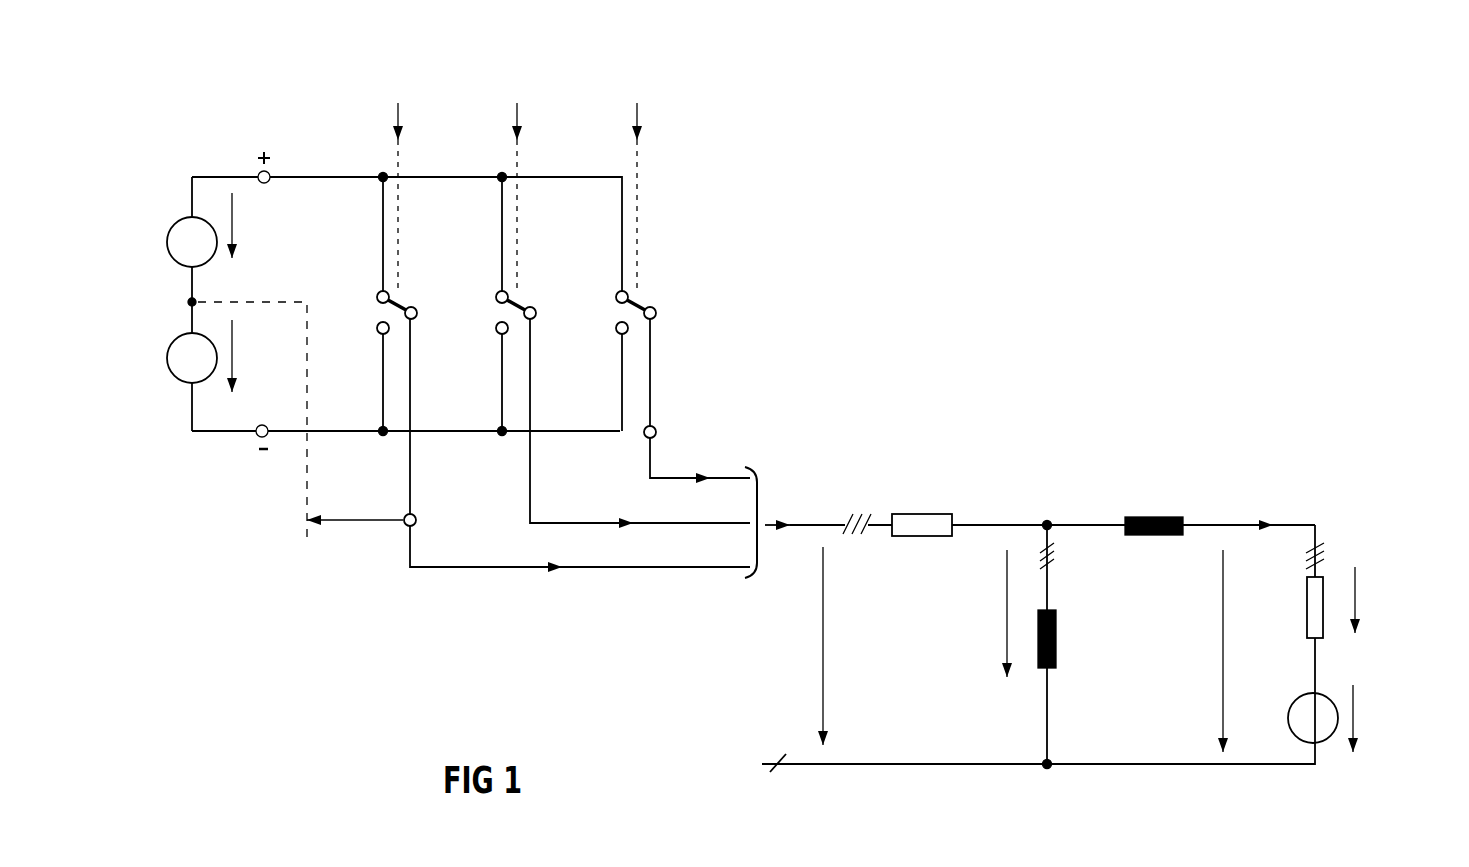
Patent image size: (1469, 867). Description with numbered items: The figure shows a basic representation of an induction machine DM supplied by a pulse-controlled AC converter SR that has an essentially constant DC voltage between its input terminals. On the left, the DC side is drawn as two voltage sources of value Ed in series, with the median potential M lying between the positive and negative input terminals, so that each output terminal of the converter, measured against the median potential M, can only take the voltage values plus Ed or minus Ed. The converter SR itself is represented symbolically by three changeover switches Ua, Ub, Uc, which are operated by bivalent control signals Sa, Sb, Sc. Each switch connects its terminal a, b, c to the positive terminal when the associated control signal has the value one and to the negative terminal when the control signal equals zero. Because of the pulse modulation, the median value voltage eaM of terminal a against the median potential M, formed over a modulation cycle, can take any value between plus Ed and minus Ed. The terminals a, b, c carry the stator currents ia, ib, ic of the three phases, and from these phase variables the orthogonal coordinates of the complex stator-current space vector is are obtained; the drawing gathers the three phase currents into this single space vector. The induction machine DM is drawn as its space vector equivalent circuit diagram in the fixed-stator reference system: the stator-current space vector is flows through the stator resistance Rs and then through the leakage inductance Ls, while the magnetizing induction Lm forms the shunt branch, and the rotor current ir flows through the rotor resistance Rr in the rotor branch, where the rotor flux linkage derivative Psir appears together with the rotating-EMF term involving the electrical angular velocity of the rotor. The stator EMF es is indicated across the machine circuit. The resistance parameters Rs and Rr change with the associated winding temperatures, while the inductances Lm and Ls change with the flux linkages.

The DC voltage Ed is at (219, 300).
The median potential M is at (231, 415).
The pulse-controlled AC converter SR is at (407, 249).
The control signal Sa is at (423, 198).
The control signal Sb is at (542, 198).
The control signal Sc is at (659, 198).
The changeover switch Ua is at (375, 304).
The changeover switch Ub is at (494, 304).
The changeover switch Uc is at (614, 361).
The terminal a is at (419, 427).
The terminal b is at (581, 421).
The terminal c is at (659, 382).
The stator current ia is at (580, 571).
The stator current ib is at (683, 499).
The stator current ic is at (700, 457).
The median value voltage eaM is at (355, 500).
The stator-current space vector is is at (800, 493).
The stator resistance Rs is at (962, 493).
The leakage inductance Ls is at (1180, 503).
The magnetizing induction Lm is at (963, 650).
The rotor current space vector ir is at (1286, 515).
The rotor resistance Rr is at (1425, 610).
The induction machine DM is at (1432, 731).
The stator EMF space vector es is at (851, 659).
The rotor flux linkage derivative Psir is at (1208, 659).